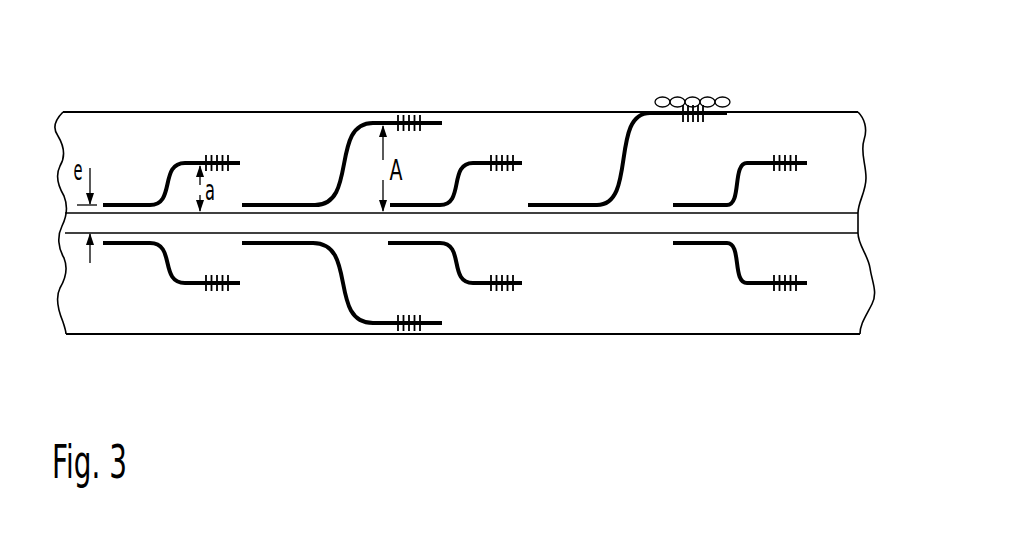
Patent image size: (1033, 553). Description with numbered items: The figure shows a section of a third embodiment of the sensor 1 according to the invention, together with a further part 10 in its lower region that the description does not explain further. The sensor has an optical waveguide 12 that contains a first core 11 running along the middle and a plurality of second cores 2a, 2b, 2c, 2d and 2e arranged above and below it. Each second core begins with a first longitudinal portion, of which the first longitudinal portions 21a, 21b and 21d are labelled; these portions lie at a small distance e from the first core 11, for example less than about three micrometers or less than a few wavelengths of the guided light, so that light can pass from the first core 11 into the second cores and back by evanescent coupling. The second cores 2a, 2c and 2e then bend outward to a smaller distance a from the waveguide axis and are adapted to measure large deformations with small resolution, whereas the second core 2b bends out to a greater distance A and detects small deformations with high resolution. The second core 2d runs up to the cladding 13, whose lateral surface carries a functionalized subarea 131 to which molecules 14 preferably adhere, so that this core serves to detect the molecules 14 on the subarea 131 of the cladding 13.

The plug connector / contact arrangement 1 is at (310, 90).
The lower housing part 10 is at (758, 322).
The first core 11 is at (604, 223).
The optical waveguide 12 is at (447, 360).
The cladding 13 is at (444, 110).
The subarea 131 is at (651, 110).
The molecules 14 is at (707, 97).
The first longitudinal portion 21a is at (117, 204).
The first longitudinal portion 21b is at (276, 204).
The first longitudinal portion 21d is at (569, 204).
The second core 2a is at (167, 221).
The second core 2b is at (342, 223).
The second core 2c is at (481, 298).
The second core 2d is at (629, 119).
The second core 2e is at (730, 262).